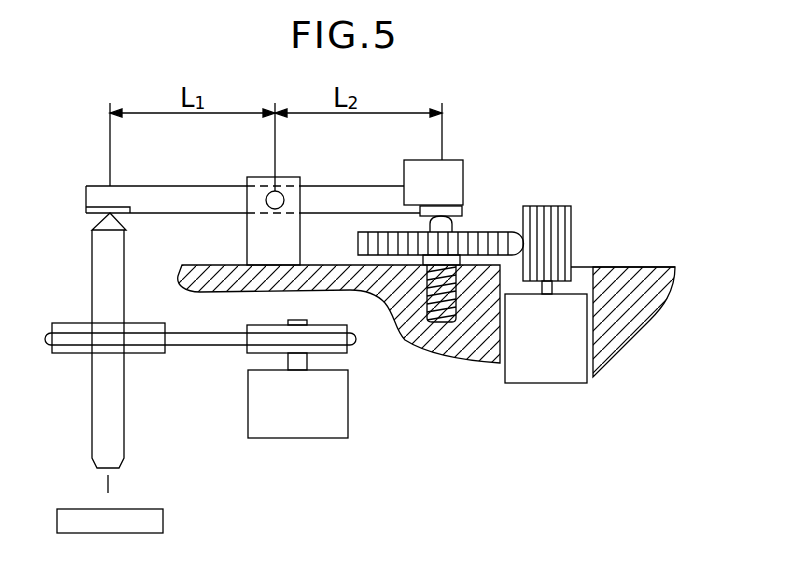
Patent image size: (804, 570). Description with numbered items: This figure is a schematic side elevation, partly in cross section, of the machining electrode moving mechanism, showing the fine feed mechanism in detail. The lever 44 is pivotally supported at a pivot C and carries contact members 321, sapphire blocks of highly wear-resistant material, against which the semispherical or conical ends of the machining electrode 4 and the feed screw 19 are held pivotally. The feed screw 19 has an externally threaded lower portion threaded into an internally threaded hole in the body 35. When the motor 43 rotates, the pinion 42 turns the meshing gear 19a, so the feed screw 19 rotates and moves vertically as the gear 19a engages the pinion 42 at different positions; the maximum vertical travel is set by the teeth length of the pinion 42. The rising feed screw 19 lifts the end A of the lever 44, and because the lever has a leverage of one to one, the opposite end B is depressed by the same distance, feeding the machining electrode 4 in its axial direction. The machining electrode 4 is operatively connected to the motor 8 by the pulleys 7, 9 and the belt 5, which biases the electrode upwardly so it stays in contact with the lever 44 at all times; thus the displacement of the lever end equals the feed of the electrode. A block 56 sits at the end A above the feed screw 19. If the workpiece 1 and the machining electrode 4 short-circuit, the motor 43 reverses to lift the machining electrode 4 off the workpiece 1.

The workpiece 1 is at (133, 517).
The machining electrode 4 is at (102, 436).
The belt 5 is at (183, 348).
The pulley 7 is at (68, 351).
The motor 8 is at (297, 431).
The pulley 9 is at (246, 353).
The feed screw 19 is at (435, 323).
The feed gear 19a is at (477, 232).
The body 35 is at (627, 273).
The pinion 42 is at (567, 213).
The motor 43 is at (545, 374).
The lever 44 is at (205, 196).
The slider block 56 is at (447, 170).
The contact members 321 is at (92, 211).
The end of the lever A is at (463, 167).
The end of the lever B is at (94, 192).
The pivot C is at (277, 200).